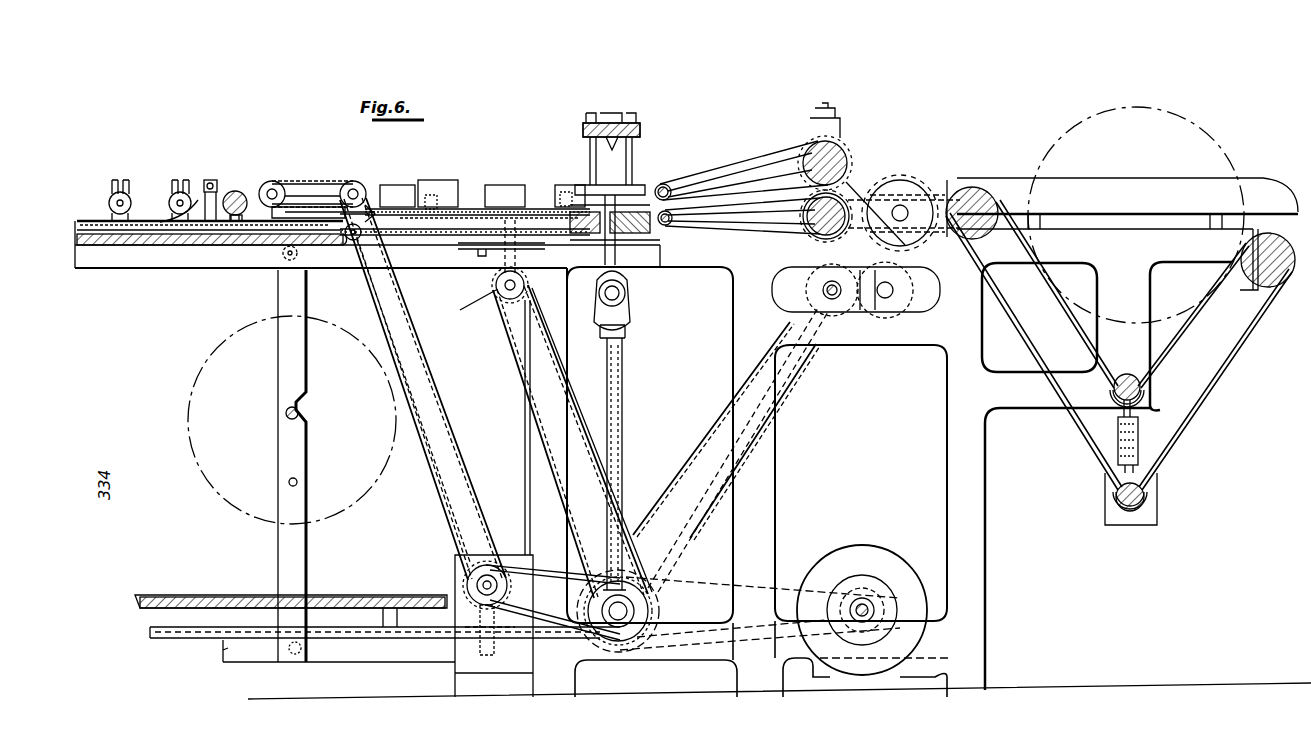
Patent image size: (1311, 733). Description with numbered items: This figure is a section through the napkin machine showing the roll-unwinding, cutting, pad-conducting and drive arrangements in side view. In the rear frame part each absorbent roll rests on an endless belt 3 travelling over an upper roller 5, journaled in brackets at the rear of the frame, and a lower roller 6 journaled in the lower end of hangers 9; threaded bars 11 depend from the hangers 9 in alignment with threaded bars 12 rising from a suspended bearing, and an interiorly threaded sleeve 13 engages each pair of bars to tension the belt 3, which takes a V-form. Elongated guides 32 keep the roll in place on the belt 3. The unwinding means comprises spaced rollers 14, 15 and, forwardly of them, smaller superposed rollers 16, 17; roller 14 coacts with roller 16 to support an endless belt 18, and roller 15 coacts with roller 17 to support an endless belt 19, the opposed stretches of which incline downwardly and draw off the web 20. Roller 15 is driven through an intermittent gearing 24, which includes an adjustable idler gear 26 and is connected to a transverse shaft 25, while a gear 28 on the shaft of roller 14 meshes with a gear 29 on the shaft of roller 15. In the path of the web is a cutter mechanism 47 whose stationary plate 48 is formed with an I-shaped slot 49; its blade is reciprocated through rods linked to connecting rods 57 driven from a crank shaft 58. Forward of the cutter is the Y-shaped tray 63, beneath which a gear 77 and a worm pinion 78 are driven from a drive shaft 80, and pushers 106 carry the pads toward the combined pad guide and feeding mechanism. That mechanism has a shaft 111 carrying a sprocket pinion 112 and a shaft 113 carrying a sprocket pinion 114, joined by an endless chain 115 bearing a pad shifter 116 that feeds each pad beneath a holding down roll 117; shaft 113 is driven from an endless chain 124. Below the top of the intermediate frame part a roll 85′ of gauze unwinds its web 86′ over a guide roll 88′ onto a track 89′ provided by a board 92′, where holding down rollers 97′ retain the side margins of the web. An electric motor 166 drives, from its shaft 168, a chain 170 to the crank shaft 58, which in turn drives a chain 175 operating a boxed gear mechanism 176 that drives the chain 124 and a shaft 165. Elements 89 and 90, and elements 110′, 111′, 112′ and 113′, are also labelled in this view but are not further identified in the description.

The endless belt 3 is at (1256, 330).
The upper roller 5 is at (1263, 285).
The lower roller 6 is at (1142, 385).
The hangers 9 is at (1136, 300).
The threaded bars 11 is at (1134, 405).
The threaded bars 12 is at (1146, 468).
The interiorly threaded sleeve 13 is at (1140, 440).
The roller 14 is at (843, 145).
The roller 15 is at (838, 205).
The roller 16 is at (670, 188).
The roller 17 is at (668, 228).
The endless belt 18 is at (756, 160).
The endless belt 19 is at (725, 186).
The web 20 is at (638, 208).
The intermittent gearing 24 is at (893, 285).
The shaft 25 is at (796, 284).
The idler gear 26 is at (903, 185).
The gear 28 is at (846, 172).
The gear 29 is at (804, 216).
The elongated guides 32 is at (1141, 188).
The cutter mechanism 47 is at (638, 122).
The stationary plate 48 is at (630, 240).
The I-shaped slot 49 is at (604, 240).
The connecting rods 57 is at (624, 430).
The crank shaft 58 is at (628, 570).
The Y-shaped tray 63 is at (448, 210).
The gear 77 is at (546, 247).
The worm pinion 78 is at (522, 290).
The drive shaft 80 is at (467, 306).
The roll of gauze 85′ is at (203, 352).
The web 86′ is at (372, 325).
The roll 88′ is at (348, 240).
The belt 89 is at (468, 218).
The track 89′ is at (180, 232).
The belt 90 is at (400, 210).
The board 92′ is at (106, 248).
The holding down rollers 97′ is at (110, 197).
The pusher 106 is at (426, 195).
The roller 110′ is at (236, 222).
The shaft 111 is at (308, 189).
The post 111′ is at (210, 182).
The sprocket pinion 112 is at (276, 184).
The roller 112′ is at (164, 200).
The shaft 113 is at (356, 186).
The guide 113′ is at (200, 200).
The sprocket pinion 114 is at (346, 186).
The endless chain 115 is at (328, 190).
The pad shifter 116 is at (370, 210).
The holding down roll 117 is at (242, 194).
The endless chain 124 is at (450, 415).
The shaft 165 is at (178, 635).
The electric motor 166 is at (878, 546).
The motor shaft 168 is at (873, 598).
The chain 170 is at (720, 568).
The chain 175 is at (543, 575).
The boxed gear mechanism 176 is at (468, 580).